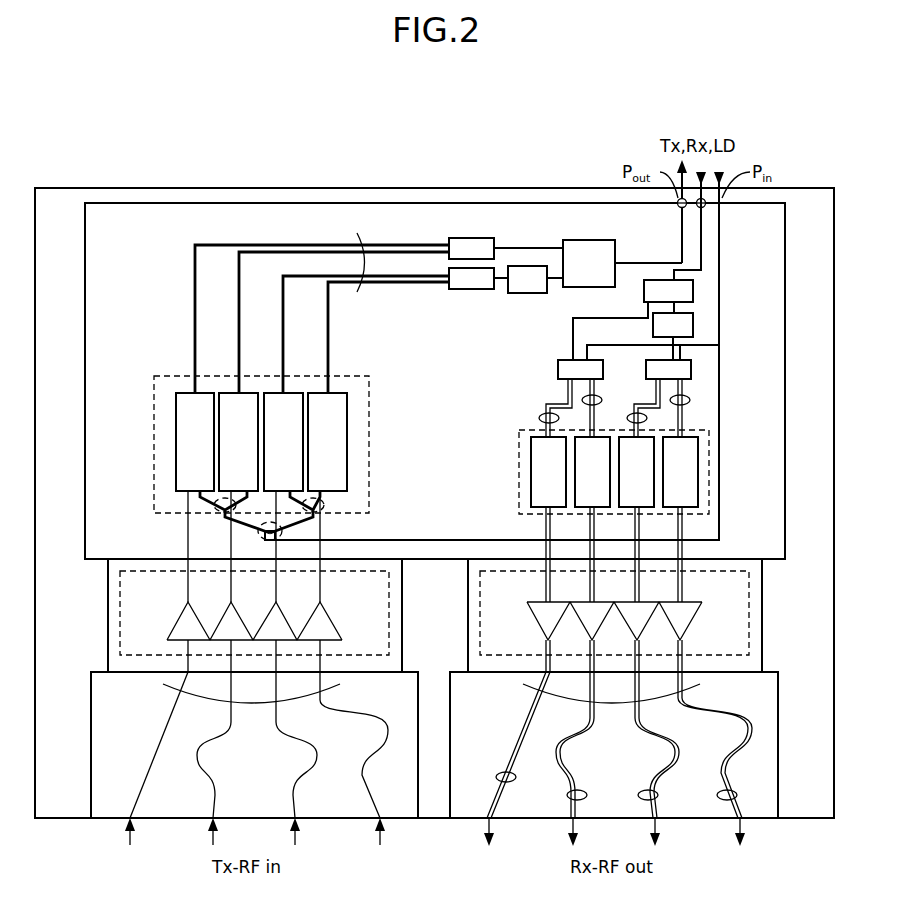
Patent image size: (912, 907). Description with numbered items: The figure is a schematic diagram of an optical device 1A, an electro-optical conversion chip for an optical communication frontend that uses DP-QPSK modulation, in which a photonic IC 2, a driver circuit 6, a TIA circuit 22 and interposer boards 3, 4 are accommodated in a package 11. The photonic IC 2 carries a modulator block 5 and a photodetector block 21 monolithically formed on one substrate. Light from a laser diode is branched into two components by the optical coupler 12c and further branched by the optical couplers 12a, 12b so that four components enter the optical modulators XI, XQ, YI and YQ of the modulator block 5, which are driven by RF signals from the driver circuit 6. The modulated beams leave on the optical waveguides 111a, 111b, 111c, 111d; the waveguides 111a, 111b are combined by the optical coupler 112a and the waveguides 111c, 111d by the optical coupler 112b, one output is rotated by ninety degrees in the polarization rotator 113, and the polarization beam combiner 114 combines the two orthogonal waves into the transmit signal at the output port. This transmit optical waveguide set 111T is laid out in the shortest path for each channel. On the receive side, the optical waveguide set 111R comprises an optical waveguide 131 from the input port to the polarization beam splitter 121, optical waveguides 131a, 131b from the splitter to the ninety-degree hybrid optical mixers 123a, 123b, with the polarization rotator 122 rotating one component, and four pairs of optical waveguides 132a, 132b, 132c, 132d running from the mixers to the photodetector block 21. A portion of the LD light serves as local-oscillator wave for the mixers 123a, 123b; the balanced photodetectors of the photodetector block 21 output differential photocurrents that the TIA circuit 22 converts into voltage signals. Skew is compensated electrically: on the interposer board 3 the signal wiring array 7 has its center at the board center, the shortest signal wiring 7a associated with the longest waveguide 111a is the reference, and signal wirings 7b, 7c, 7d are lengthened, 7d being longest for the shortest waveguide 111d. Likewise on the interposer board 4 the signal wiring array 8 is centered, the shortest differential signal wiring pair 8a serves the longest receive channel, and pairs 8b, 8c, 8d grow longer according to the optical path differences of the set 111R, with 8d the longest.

The optical device 1A is at (822, 126).
The photonic integrated circuit 2 is at (785, 225).
The interposer board 3 is at (91, 727).
The interposer board 4 is at (778, 722).
The modulator block 5 is at (154, 435).
The driver circuit 6 is at (120, 620).
The signal wiring array 7 is at (163, 688).
The signal wiring 7a is at (155, 757).
The signal wiring 7b is at (200, 772).
The signal wiring 7c is at (283, 783).
The signal wiring 7d is at (360, 778).
The signal wiring array 8 is at (523, 690).
The differential signal wiring pair 8a is at (500, 778).
The differential signal wiring pair 8b is at (570, 790).
The differential signal wiring pair 8c is at (640, 790).
The differential signal wiring pair 8d is at (720, 790).
The package 11 is at (157, 189).
The optical coupler 12a is at (200, 508).
The optical coupler 12b is at (322, 512).
The optical coupler 12c is at (262, 535).
The photodetector block 21 is at (709, 475).
The TIA circuit 22 is at (749, 610).
The optical waveguide 111a is at (196, 280).
The optical waveguide 111b is at (239, 303).
The optical waveguide 111c is at (283, 328).
The optical waveguide 111d is at (328, 353).
The optical waveguide set 111T is at (360, 292).
The optical waveguide set 111R is at (688, 390).
The optical coupler 112a is at (470, 238).
The optical coupler 112b is at (470, 289).
The polarization rotator 113 is at (528, 293).
The polarization beam combiner 114 is at (585, 240).
The polarization beam splitter 121 is at (693, 292).
The polarization rotator 122 is at (693, 327).
The 90° hybrid optical mixer 123a is at (558, 370).
The 90° hybrid optical mixer 123b is at (691, 366).
The optical waveguide 131 is at (701, 243).
The optical waveguide 131a is at (640, 318).
The optical waveguide 131b is at (674, 308).
The pair of optical waveguides 132a is at (548, 418).
The pair of optical waveguides 132b is at (590, 400).
The pair of optical waveguides 132c is at (648, 418).
The pair of optical waveguides 132d is at (690, 400).